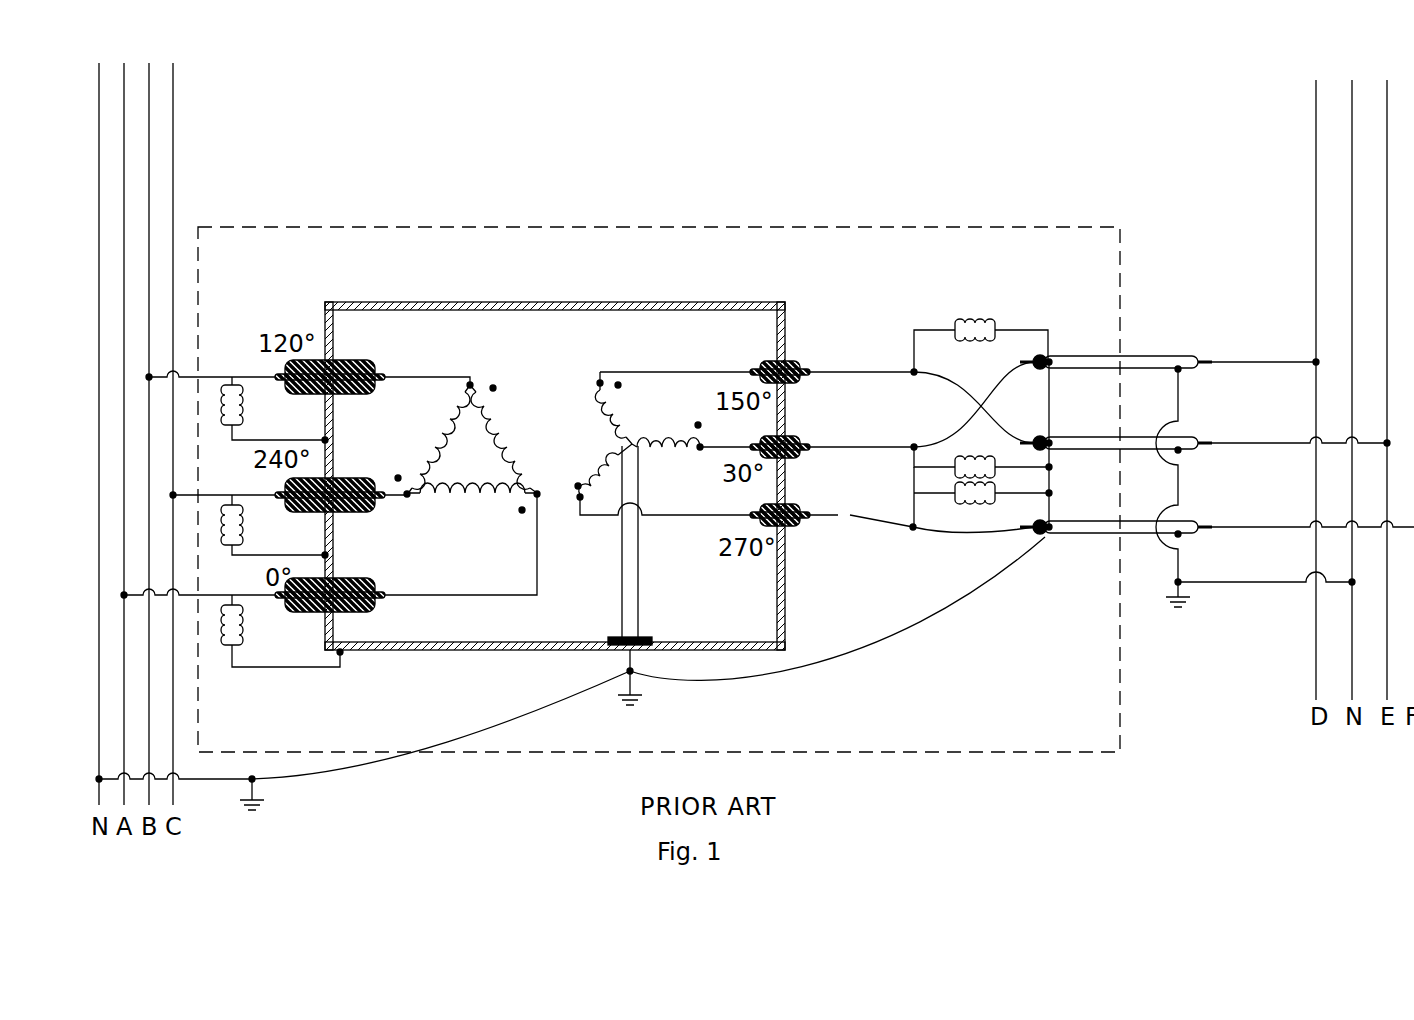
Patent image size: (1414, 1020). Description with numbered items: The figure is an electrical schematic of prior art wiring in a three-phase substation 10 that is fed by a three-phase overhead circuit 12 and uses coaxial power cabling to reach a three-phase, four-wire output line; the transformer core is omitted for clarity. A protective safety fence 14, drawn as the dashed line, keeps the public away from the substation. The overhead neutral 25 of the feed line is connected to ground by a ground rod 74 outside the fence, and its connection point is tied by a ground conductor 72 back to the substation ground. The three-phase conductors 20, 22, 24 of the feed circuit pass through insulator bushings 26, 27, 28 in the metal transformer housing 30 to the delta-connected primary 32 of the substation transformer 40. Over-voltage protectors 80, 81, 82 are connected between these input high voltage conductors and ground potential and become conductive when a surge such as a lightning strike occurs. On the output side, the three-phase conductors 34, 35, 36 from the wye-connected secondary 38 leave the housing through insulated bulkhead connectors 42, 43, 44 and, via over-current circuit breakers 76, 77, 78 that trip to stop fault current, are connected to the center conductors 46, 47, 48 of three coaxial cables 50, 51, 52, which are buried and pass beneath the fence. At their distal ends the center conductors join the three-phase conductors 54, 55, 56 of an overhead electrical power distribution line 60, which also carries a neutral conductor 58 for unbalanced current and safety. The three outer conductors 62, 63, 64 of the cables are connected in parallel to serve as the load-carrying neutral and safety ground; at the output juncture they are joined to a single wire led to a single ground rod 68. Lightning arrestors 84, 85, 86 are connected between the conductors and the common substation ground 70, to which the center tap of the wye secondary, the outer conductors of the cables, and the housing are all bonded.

The three-phase substation 10 is at (548, 218).
The three-phase overhead circuit 12 is at (182, 188).
The protective safety fence 14 is at (330, 226).
The three-phase conductor 20 is at (124, 85).
The three-phase conductor 22 is at (149, 100).
The three-phase conductor 24 is at (173, 120).
The overhead neutral conductor 25 is at (99, 197).
The insulator bushing 26 is at (352, 579).
The insulator bushing 27 is at (388, 505).
The insulator bushing 28 is at (350, 361).
The metal transformer housing 30 is at (548, 301).
The delta-connected primary 32 is at (506, 410).
The three-phase conductor 34 is at (870, 446).
The three-phase conductor 35 is at (865, 371).
The three-phase conductor 36 is at (988, 540).
The wye-connected secondary 38 is at (604, 418).
The substation transformer 40 is at (536, 631).
The insulated bulkhead connector 42 is at (790, 436).
The insulated bulkhead connector 43 is at (786, 361).
The insulated bulkhead connector 44 is at (790, 504).
The center conductor 46 is at (1200, 361).
The center conductor 47 is at (1200, 442).
The center conductor 48 is at (1200, 526).
The coaxial cable 50 is at (1128, 359).
The coaxial cable 51 is at (1122, 441).
The coaxial cable 52 is at (1122, 524).
The three-phase conductor 54 is at (1316, 655).
The three-phase conductor 55 is at (1387, 148).
The three-phase conductor 56 is at (1413, 138).
The neutral conductor 58 is at (1352, 163).
The overhead electrical power distribution line 60 is at (1268, 641).
The outer conductor 62 is at (1060, 370).
The outer conductor 63 is at (1060, 450).
The outer conductor 64 is at (1060, 535).
The ground rod 68 is at (1190, 598).
The common substation ground 70 is at (640, 700).
The ground conductor 72 is at (415, 771).
The ground rod 74 is at (262, 805).
The over-current circuit breaker 76 is at (840, 449).
The over-current circuit breaker 77 is at (843, 371).
The over-current circuit breaker 78 is at (840, 517).
The over-voltage protector 80 is at (243, 629).
The over-voltage protector 81 is at (243, 524).
The over-voltage protector 82 is at (243, 404).
The lightning arrestor 84 is at (960, 459).
The lightning arrestor 85 is at (960, 322).
The lightning arrestor 86 is at (978, 507).